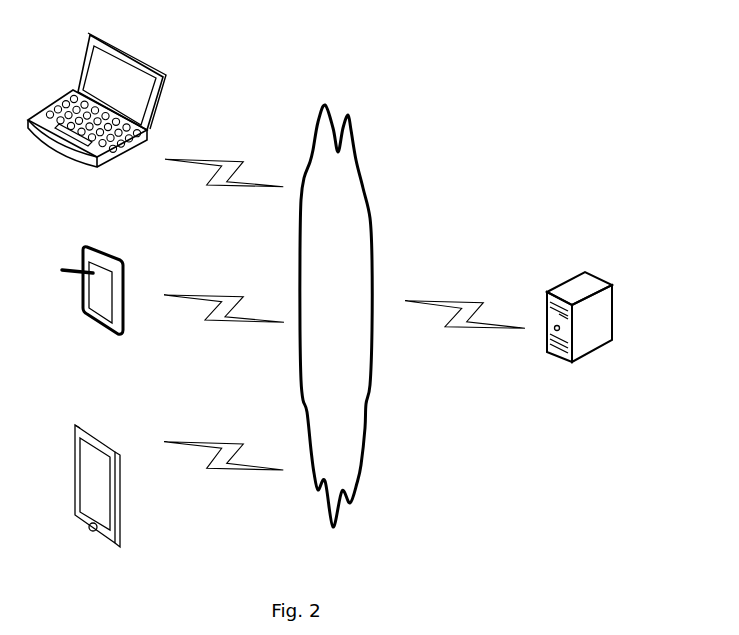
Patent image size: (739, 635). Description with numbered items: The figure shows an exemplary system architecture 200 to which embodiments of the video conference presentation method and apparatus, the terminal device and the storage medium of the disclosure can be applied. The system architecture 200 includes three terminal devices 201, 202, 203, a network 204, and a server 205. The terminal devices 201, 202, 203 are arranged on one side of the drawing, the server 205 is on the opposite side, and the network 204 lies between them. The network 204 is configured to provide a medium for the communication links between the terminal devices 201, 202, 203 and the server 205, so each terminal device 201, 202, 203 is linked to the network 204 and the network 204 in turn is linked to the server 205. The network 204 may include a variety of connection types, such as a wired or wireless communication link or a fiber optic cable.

The system architecture 200 is at (565, 86).
The terminal device 201 is at (97, 506).
The terminal device 202 is at (92, 308).
The terminal device 203 is at (97, 117).
The network 204 is at (336, 316).
The server 205 is at (579, 340).